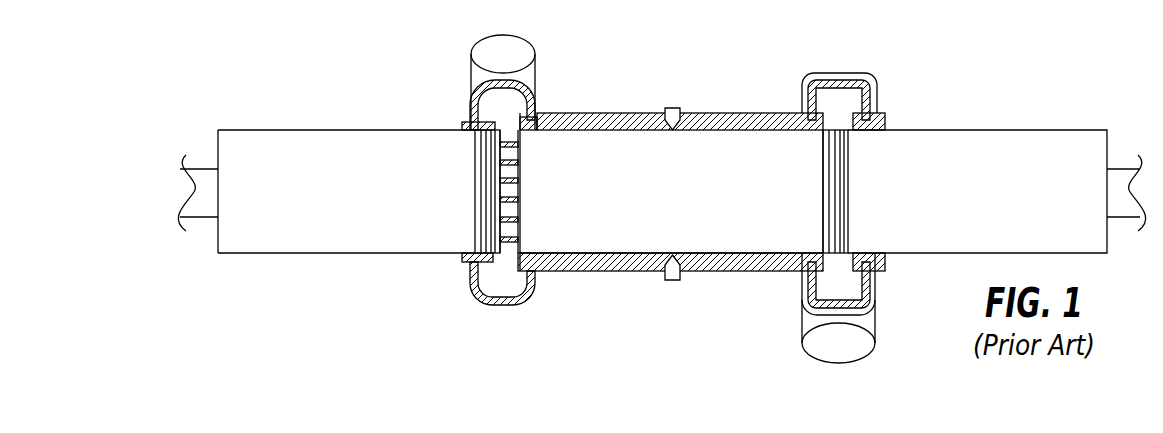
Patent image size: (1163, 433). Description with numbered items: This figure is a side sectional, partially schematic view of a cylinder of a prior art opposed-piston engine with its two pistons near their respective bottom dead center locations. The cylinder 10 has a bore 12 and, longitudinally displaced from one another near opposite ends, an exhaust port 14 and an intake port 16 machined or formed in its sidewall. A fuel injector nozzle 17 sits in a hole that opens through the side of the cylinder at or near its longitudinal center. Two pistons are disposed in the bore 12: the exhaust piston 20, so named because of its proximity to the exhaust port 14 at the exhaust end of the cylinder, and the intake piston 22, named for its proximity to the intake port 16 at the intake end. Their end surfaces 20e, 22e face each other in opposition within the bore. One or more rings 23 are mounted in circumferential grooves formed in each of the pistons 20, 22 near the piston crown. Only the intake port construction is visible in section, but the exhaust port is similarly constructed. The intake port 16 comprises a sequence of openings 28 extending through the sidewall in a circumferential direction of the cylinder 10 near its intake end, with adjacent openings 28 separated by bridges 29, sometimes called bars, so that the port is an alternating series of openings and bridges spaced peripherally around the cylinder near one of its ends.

The cylinder 10 is at (743, 271).
The bore 12 is at (600, 253).
The exhaust port 14 is at (828, 257).
The intake port 16 is at (505, 262).
The fuel injector nozzle 17 is at (672, 108).
The exhaust piston 20 is at (1004, 130).
The end surface of exhaust piston 20e is at (823, 210).
The intake piston 22 is at (305, 130).
The end surface of intake piston 22e is at (500, 232).
The rings 23 is at (477, 167).
The openings 28 is at (515, 172).
The bridges 29 is at (518, 162).